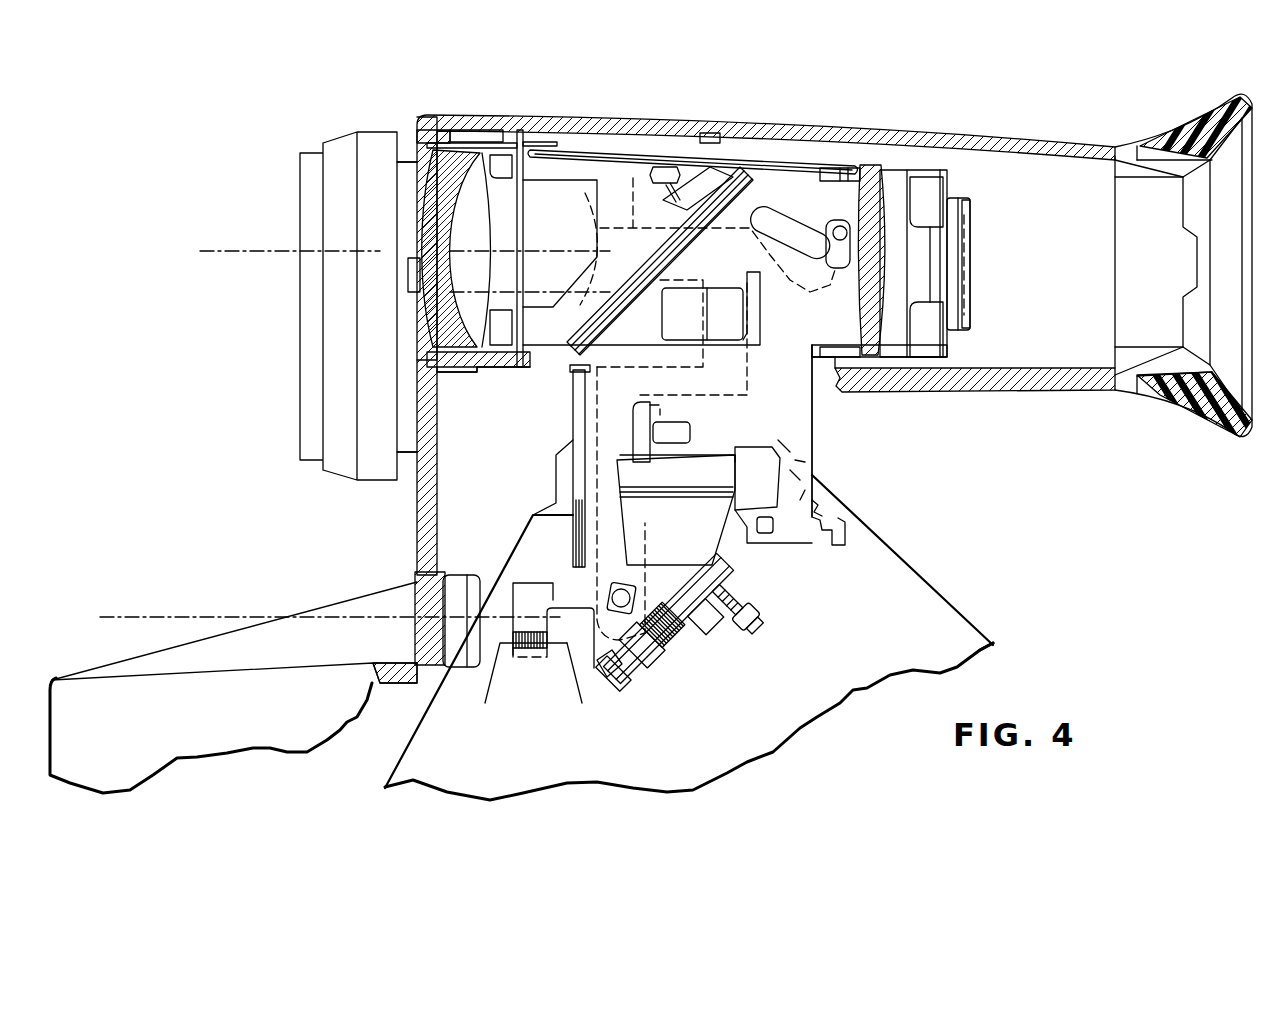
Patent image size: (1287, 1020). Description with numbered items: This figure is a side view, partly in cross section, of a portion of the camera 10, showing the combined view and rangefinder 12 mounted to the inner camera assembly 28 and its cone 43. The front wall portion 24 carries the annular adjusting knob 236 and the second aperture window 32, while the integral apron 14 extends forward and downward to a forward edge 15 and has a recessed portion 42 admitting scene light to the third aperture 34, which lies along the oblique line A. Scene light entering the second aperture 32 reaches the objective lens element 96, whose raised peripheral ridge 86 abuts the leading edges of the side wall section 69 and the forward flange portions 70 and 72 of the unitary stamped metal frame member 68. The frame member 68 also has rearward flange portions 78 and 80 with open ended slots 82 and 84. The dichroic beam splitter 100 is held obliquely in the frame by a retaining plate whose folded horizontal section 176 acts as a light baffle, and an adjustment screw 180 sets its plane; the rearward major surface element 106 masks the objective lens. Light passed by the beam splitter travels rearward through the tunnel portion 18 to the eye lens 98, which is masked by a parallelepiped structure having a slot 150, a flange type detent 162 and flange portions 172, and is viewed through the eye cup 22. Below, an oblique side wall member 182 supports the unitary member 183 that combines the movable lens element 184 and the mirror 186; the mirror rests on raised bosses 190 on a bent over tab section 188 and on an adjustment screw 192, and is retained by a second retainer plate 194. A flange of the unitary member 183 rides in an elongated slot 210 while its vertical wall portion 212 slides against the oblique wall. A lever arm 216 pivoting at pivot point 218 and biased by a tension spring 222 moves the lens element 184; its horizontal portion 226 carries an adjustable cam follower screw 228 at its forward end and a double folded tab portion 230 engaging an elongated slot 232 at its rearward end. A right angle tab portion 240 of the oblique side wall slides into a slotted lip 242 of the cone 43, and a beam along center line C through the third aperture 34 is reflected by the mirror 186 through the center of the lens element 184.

The camera 10 is at (696, 92).
The combined view and rangefinder 12 is at (822, 398).
The apron 14 is at (238, 628).
The forward edge 15 is at (53, 680).
The tunnel portion 18 is at (1023, 133).
The eye cup 22 is at (1243, 96).
The front wall portion 24 is at (415, 150).
The inner camera assembly 28 is at (910, 551).
The second aperture window 32 is at (415, 160).
The third aperture 34 is at (413, 580).
The recessed portion 42 is at (262, 663).
The cone 43 is at (973, 623).
The frame member 68 is at (783, 158).
The side wall section 69 is at (604, 196).
The forward folded flange portion 70 is at (463, 145).
The forward folded flange portion 72 is at (500, 363).
The rearward folded flange portion 78 is at (903, 167).
The rearward folded flange portion 80 is at (903, 363).
The open ended slot 82 is at (873, 163).
The open ended slot 84 is at (877, 385).
The raised peripheral ridge 86 is at (462, 137).
The objective lens element 96 is at (404, 282).
The eye lens 98 is at (890, 210).
The dichroic beam splitter 100 is at (655, 277).
The rearward major surface element 106 is at (526, 350).
The slot 150 is at (933, 278).
The flange type detent 162 is at (970, 237).
The flange portions 172 is at (930, 207).
The folded horizontal section 176 is at (728, 335).
The adjustment screw 180 is at (688, 128).
The oblique side wall member 182 is at (813, 427).
The unitary member 183 is at (714, 455).
The movable lens element 184 is at (648, 402).
The mirror 186 is at (667, 607).
The bent over tab section 188 is at (710, 625).
The raised bosses 190 is at (641, 684).
The adjustment screw 192 is at (765, 612).
The second retainer plate 194 is at (606, 649).
The elongated slot 210 is at (600, 497).
The vertical wall portion 212 is at (720, 533).
The lever arm 216 is at (660, 168).
The pivot point 218 is at (604, 593).
The tension spring 222 is at (813, 500).
The horizontal portion 226 is at (553, 190).
The adjustable screw 228 is at (420, 218).
The double folded tab portion 230 is at (840, 226).
The elongated slot 232 is at (787, 222).
The annular adjusting knob 236 is at (337, 133).
The right angle tab portion 240 is at (503, 645).
The slotted lip 242 is at (578, 657).
The line A is at (405, 264).
The center line C is at (158, 617).